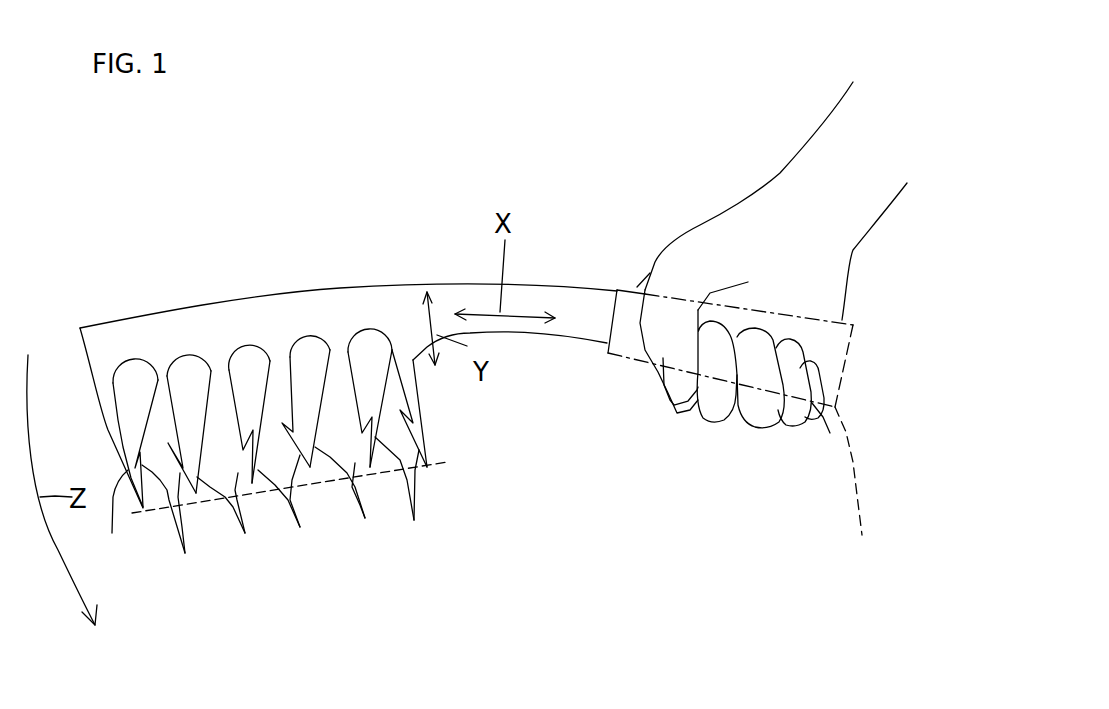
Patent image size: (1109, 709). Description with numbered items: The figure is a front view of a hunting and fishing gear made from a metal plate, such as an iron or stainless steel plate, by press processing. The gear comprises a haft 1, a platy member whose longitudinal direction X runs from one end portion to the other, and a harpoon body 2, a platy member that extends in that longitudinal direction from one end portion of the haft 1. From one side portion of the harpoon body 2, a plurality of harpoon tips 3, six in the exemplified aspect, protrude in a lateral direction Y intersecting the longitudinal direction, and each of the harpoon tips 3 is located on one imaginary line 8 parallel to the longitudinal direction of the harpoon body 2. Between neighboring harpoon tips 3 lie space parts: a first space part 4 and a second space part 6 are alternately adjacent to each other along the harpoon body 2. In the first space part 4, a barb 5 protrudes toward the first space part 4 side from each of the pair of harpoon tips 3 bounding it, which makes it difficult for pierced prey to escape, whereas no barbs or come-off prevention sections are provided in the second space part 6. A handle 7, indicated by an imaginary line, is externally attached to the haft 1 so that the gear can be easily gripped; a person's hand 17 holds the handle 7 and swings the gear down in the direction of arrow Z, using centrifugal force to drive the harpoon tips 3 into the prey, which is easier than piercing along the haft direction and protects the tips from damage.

The haft 1 is at (580, 303).
The harpoon body 2 is at (262, 289).
The harpoon tips 3 is at (112, 534).
The first space part 4 is at (137, 370).
The barb 5 is at (185, 554).
The second space part 6 is at (197, 367).
The handle 7 is at (857, 490).
The imaginary line 8 is at (275, 485).
The person's hand 17 is at (708, 232).